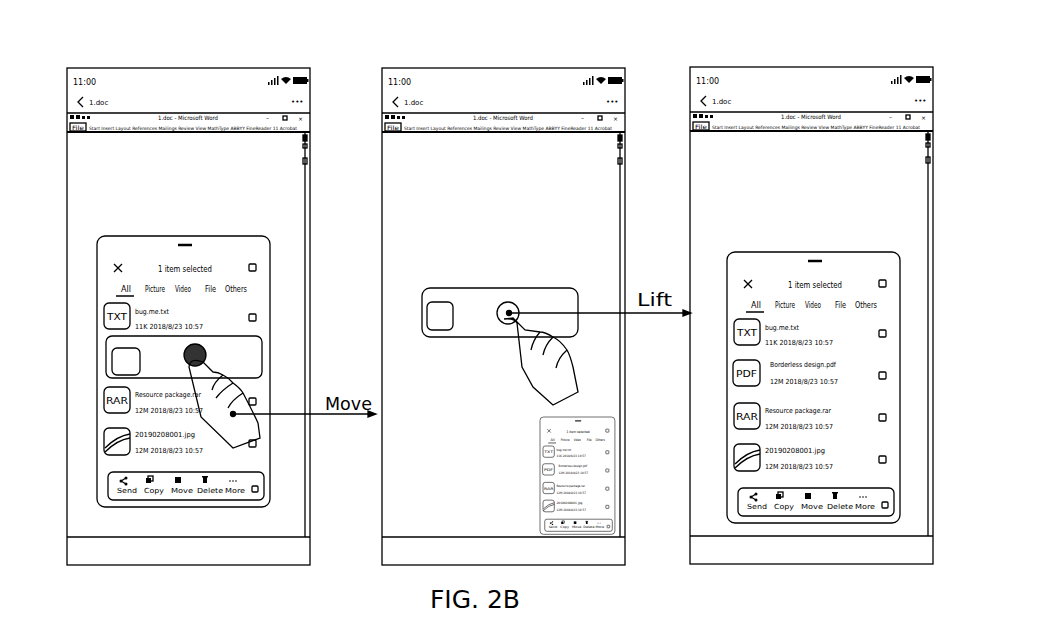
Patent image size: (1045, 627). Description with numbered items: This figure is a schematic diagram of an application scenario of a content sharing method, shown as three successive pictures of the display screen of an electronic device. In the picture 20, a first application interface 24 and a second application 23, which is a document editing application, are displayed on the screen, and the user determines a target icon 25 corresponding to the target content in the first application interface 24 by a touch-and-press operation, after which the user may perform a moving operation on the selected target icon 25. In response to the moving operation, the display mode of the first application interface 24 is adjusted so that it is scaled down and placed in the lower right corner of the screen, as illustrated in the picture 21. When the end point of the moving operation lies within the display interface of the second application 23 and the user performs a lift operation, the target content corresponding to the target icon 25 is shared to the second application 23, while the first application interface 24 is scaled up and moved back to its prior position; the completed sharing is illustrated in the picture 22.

The picture 20 is at (168, 75).
The picture 21 is at (502, 76).
The picture 22 is at (808, 75).
The second application 23 is at (97, 160).
The first application interface 24 is at (98, 245).
The target icon 25 is at (237, 360).